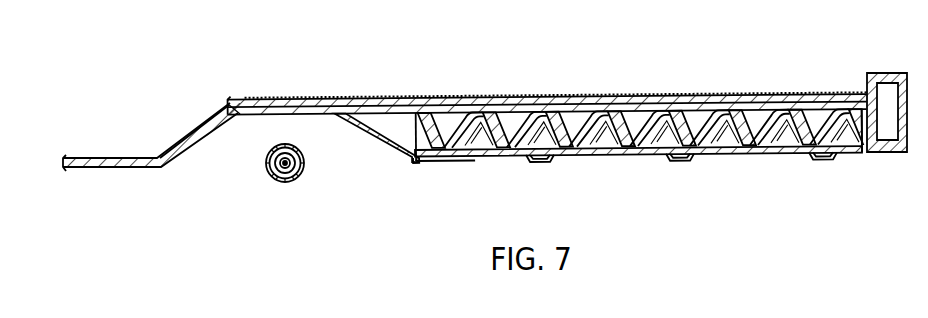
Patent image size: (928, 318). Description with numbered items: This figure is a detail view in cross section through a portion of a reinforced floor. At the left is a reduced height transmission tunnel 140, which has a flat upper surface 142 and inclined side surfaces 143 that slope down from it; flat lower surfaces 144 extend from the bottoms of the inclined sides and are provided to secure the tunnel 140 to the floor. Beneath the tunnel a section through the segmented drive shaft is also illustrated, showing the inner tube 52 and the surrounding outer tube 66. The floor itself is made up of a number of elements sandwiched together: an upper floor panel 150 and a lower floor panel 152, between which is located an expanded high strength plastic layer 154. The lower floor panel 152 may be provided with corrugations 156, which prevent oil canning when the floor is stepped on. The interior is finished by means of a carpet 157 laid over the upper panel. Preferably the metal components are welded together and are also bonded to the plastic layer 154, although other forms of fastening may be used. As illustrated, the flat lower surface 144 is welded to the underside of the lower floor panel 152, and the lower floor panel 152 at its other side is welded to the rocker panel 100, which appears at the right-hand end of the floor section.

The rocker panel 100 is at (882, 72).
The inner tube 52 is at (291, 160).
The outer tube 66 is at (292, 177).
The reduced height transmission tunnel 140 is at (269, 132).
The flat upper surface 142 is at (255, 116).
The inclined side surfaces 143 is at (183, 149).
The flat lower surfaces 144 is at (111, 157).
The upper floor panel 150 is at (639, 133).
The lower floor panel 152 is at (598, 159).
The expanded high strength plastic layer 154 is at (498, 150).
The corrugations 156 is at (541, 164).
The carpet 157 is at (380, 97).